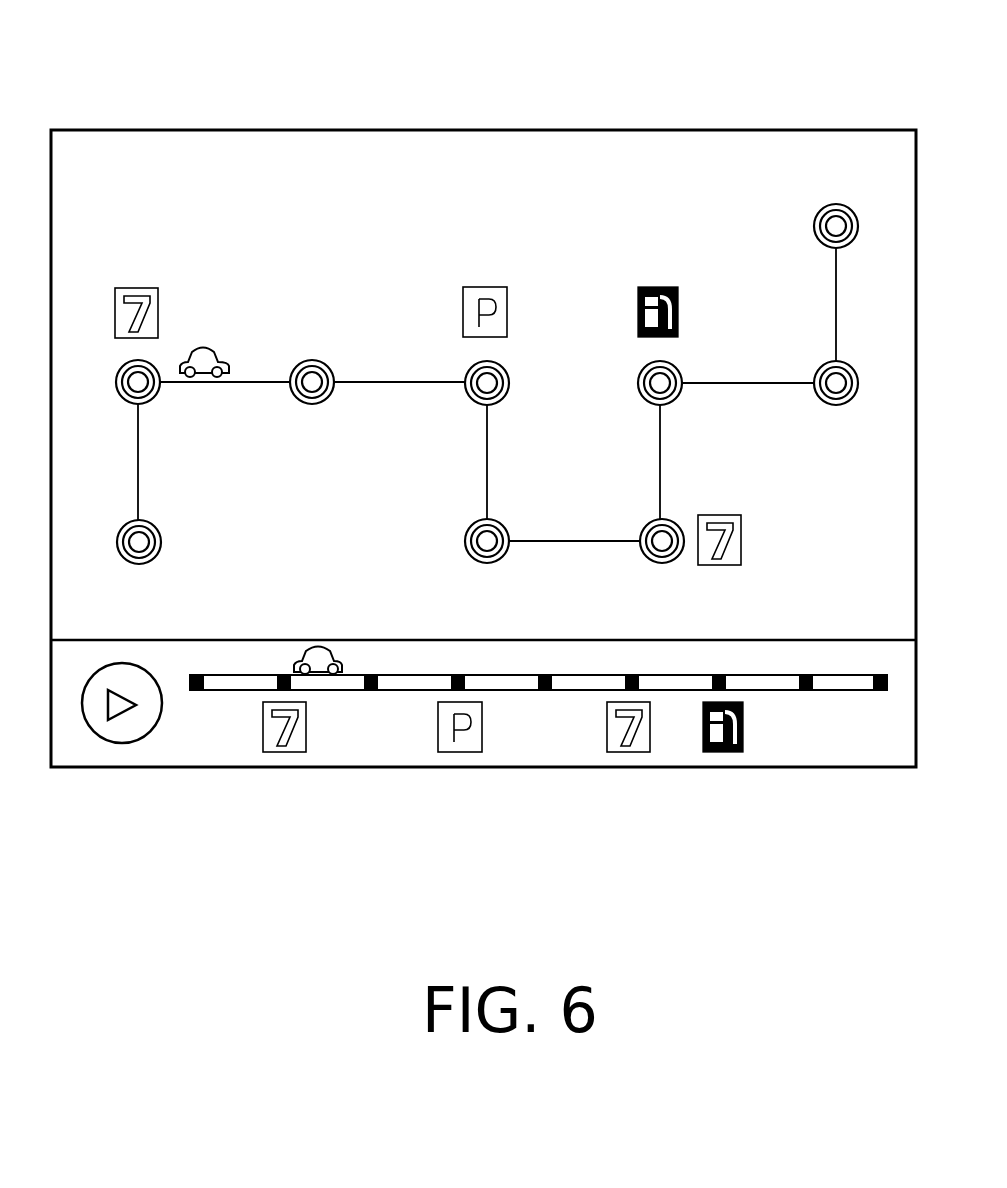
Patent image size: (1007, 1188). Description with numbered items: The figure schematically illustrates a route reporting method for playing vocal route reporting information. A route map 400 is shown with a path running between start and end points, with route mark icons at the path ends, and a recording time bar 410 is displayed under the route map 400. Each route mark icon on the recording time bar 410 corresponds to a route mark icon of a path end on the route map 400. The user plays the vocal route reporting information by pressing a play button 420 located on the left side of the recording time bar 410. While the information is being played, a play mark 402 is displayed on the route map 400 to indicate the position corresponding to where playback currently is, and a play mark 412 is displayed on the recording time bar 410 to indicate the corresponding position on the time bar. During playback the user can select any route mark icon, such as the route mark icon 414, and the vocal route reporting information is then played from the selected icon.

The route map 400 is at (720, 167).
The play mark 402 is at (200, 347).
The recording time bar 410 is at (529, 760).
The play mark 412 is at (320, 660).
The route mark icon 414 is at (457, 750).
The play button 420 is at (128, 733).